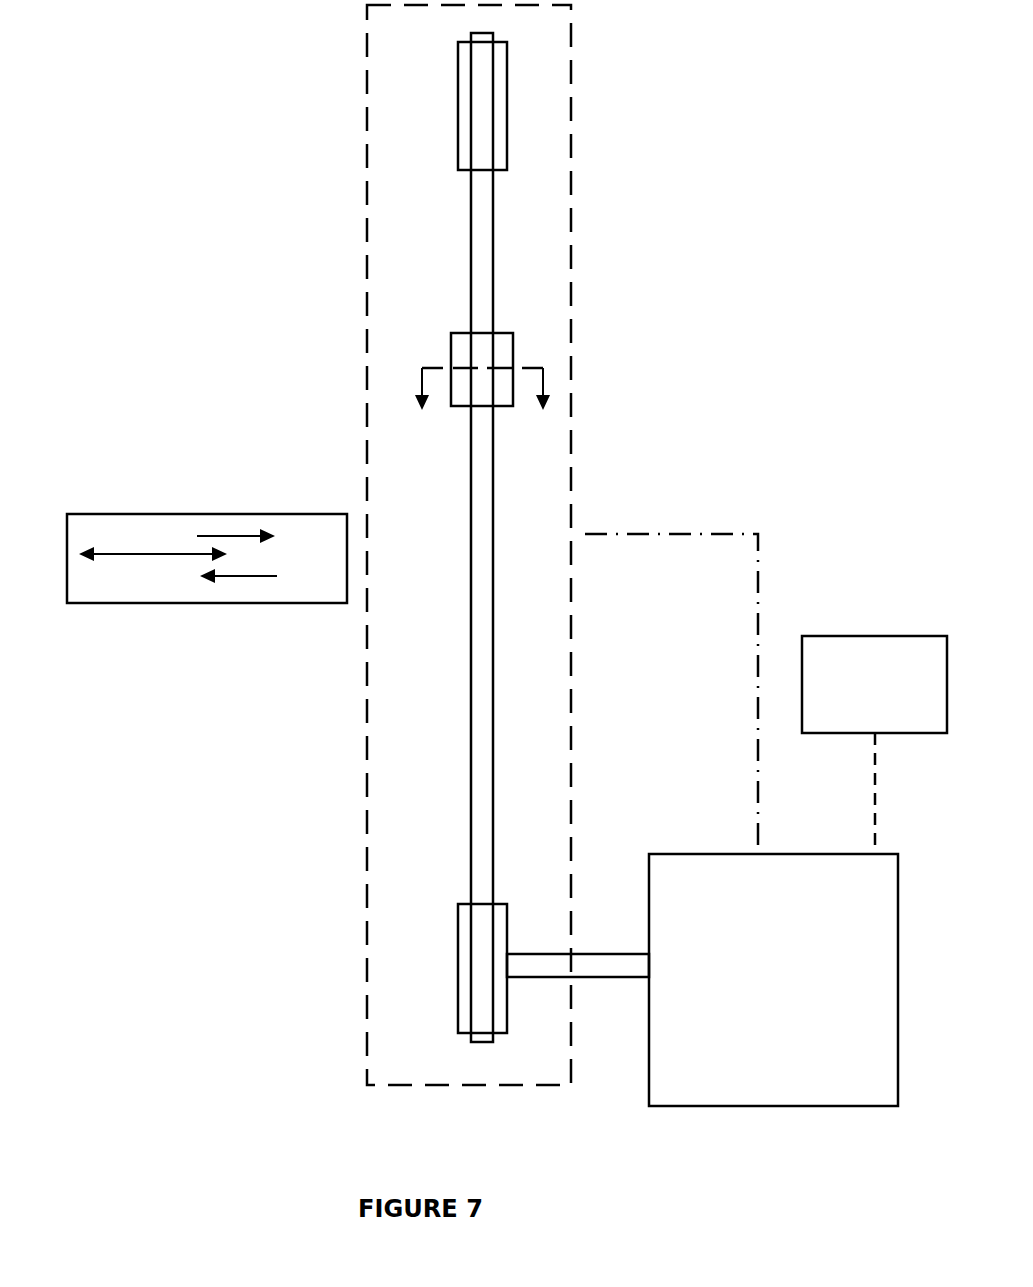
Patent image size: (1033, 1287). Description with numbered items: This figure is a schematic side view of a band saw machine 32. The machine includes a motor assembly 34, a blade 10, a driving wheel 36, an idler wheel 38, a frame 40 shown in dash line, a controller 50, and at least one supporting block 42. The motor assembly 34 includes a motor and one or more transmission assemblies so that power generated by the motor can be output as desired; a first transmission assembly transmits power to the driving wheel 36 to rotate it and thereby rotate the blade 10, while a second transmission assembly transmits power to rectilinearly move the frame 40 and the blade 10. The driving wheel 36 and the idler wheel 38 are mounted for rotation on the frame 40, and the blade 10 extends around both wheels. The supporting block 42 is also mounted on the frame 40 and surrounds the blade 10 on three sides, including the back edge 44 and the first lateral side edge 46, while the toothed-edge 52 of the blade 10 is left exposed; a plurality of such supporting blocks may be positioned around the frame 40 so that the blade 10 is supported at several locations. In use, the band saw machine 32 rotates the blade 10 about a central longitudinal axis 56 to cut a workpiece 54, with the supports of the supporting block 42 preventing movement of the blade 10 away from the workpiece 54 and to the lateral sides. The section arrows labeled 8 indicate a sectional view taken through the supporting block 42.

The band saw machine 32 is at (152, 121).
The frame 40 is at (569, 58).
The blade 10 is at (478, 250).
The idler wheel 38 is at (466, 80).
The supporting block 42 is at (403, 318).
The section line 8 is at (483, 407).
The back edge 44 is at (493, 476).
The toothed-edge 52 is at (471, 482).
The first lateral side edge 46 is at (480, 533).
The workpiece 54 is at (108, 520).
The central longitudinal axis 56 is at (162, 554).
The controller 50 is at (874, 745).
The motor assembly 34 is at (702, 820).
The driving wheel 36 is at (463, 992).